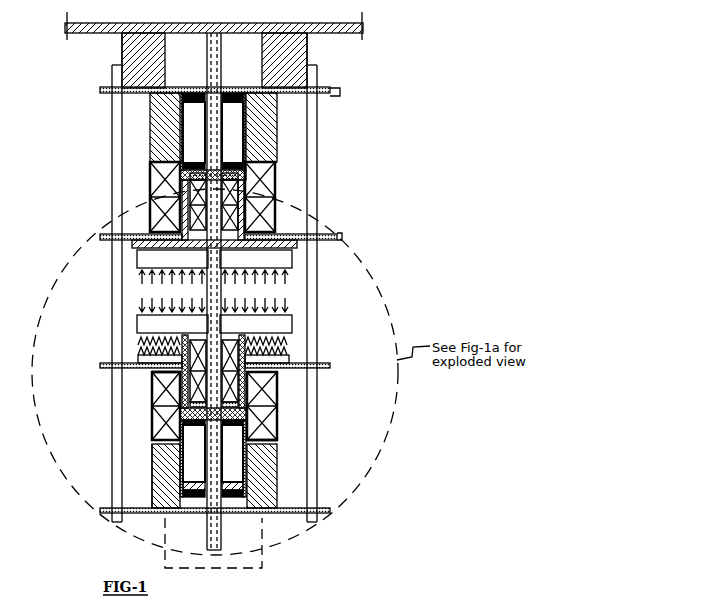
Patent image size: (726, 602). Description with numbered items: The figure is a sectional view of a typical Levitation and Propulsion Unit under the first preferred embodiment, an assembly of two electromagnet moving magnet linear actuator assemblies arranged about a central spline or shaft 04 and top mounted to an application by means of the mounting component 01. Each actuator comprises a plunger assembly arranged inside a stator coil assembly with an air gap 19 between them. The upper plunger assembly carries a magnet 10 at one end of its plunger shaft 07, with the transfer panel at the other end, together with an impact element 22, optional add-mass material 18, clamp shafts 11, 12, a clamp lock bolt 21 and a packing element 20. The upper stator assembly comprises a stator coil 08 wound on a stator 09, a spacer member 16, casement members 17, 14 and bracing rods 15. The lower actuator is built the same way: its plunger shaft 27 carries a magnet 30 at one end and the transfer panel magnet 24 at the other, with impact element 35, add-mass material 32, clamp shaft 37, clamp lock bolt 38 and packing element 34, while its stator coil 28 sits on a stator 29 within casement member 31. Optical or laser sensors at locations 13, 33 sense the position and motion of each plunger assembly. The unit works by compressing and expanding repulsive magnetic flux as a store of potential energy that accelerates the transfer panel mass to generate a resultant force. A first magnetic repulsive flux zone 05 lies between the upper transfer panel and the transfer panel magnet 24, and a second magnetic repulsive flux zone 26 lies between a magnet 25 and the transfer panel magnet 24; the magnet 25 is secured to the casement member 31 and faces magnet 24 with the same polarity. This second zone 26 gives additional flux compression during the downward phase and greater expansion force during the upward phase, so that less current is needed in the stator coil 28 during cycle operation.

The mounting component 01 is at (340, 36).
The clamp shaft 12 is at (307, 62).
The optical/laser sensor location 13 is at (236, 49).
The casement member 14 is at (125, 50).
The bracing rod 15 is at (120, 160).
The packing element 20 is at (120, 92).
The impact element 22 is at (150, 76).
The magnet 10 is at (165, 137).
The add-mass material 18 is at (150, 112).
The clamp shaft 11 is at (270, 118).
The clamp lock bolt 21 is at (277, 128).
The casement member 17 is at (150, 125).
The stator coil 08 is at (150, 180).
The stator 09 is at (270, 165).
The plunger shaft 07 is at (150, 200).
The first magnetic repulsive flux zone 05 is at (272, 292).
The central spline or shaft 04 is at (280, 303).
The transfer panel magnet 24 is at (295, 322).
The second magnetic repulsive flux zone 26 is at (292, 342).
The magnet 25 is at (296, 352).
The casement member 31 is at (330, 367).
The plunger shaft 27 is at (138, 334).
The add-mass material 32 is at (150, 382).
The air gap 19 is at (150, 405).
The stator coil 28 is at (290, 405).
The stator 29 is at (290, 432).
The clamp lock bolt 38 is at (150, 446).
The clamp shaft 37 is at (150, 456).
The spacer member 16 is at (160, 470).
The magnet 30 is at (280, 450).
The packing element 34 is at (280, 472).
The impact element 35 is at (280, 490).
The optical/laser sensor location 33 is at (243, 542).